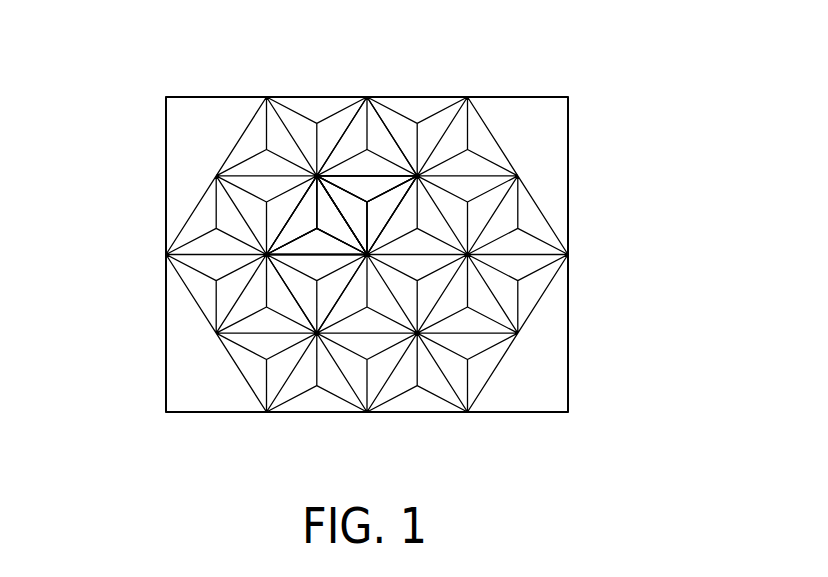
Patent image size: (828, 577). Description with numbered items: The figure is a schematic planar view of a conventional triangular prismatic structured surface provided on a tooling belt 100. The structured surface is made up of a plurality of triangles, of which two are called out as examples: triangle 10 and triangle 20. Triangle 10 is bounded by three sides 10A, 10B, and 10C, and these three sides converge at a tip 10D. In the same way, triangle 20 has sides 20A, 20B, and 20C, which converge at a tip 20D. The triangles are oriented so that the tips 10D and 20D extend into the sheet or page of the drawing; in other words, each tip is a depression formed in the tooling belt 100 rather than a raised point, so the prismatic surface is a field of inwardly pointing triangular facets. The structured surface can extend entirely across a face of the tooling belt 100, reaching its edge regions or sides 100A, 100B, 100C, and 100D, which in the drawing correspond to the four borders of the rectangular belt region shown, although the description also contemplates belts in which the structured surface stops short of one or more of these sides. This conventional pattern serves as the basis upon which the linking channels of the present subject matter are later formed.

The tooling belt 100 is at (537, 355).
The side 100A is at (167, 155).
The side 100B is at (533, 97).
The side 100C is at (568, 323).
The side 100D is at (530, 413).
The triangle 10 is at (308, 214).
The side 10A is at (292, 216).
The side 10B is at (350, 216).
The side 10C is at (313, 250).
The tip 10D is at (312, 242).
The triangle 20 is at (395, 178).
The side 20A is at (362, 216).
The side 20B is at (388, 205).
The side 20C is at (393, 182).
The tip 20D is at (380, 185).